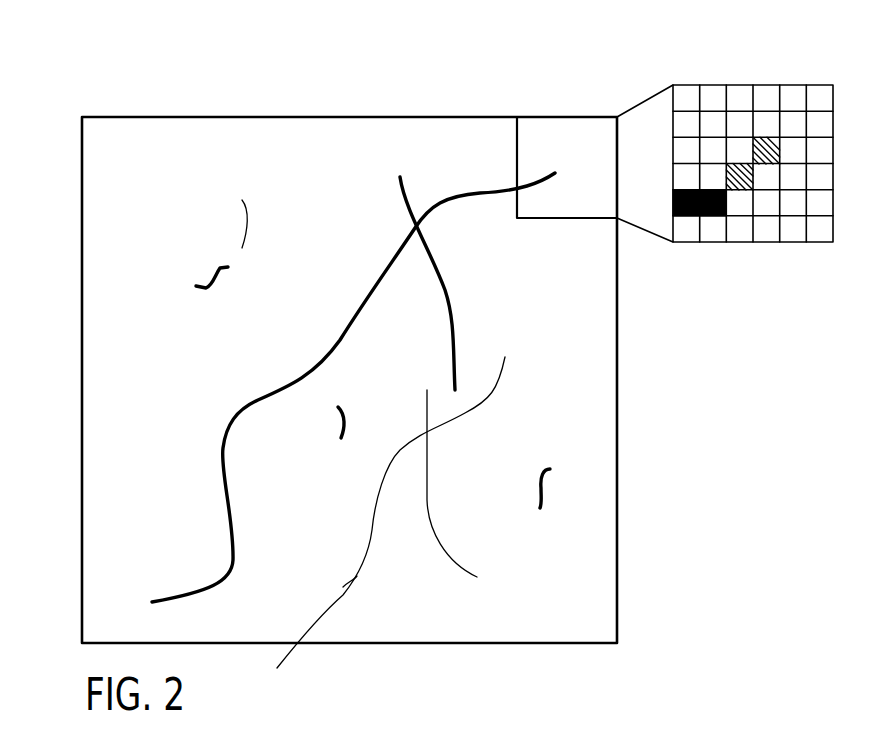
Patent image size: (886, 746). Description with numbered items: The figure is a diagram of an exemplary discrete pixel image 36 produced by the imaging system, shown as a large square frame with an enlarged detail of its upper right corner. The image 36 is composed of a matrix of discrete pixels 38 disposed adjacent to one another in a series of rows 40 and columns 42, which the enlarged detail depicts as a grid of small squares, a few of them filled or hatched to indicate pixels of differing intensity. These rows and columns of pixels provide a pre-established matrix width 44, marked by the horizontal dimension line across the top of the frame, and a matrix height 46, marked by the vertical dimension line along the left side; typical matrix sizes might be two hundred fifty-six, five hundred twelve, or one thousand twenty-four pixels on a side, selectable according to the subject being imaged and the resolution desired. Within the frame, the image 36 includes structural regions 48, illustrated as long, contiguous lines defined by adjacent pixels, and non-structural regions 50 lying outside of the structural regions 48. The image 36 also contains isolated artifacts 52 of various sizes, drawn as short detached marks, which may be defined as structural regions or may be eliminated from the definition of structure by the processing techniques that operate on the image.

The discrete pixel image 36 is at (645, 422).
The discrete pixels 38 is at (767, 208).
The rows 40 is at (673, 100).
The columns 42 is at (687, 85).
The matrix width 44 is at (82, 48).
The matrix height 46 is at (17, 117).
The structural regions 48 is at (232, 566).
The non-structural regions 50 is at (440, 613).
The isolated artifacts 52 is at (240, 221).